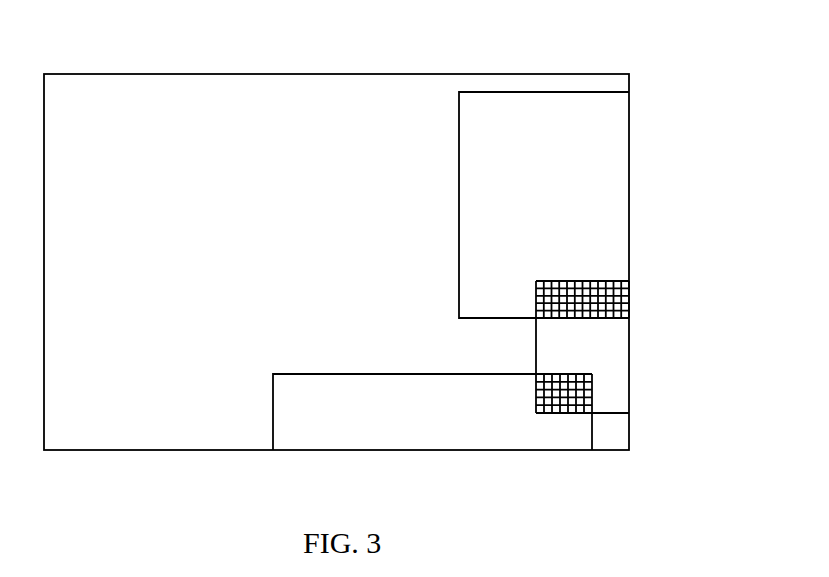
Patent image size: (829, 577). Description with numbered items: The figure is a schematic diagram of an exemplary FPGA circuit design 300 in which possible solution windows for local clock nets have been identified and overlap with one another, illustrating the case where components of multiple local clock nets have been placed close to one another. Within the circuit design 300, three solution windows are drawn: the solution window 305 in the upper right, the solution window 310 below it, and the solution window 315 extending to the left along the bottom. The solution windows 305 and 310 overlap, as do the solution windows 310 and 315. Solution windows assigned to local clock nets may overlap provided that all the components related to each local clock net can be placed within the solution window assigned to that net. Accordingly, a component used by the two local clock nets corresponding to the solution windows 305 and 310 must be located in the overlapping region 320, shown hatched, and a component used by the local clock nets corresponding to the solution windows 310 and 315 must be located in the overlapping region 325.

The FPGA circuit design 300 is at (366, 58).
The solution window 305 is at (544, 205).
The solution window 310 is at (582, 384).
The solution window 315 is at (404, 412).
The overlapping region 320 is at (630, 300).
The overlapping region 325 is at (592, 394).